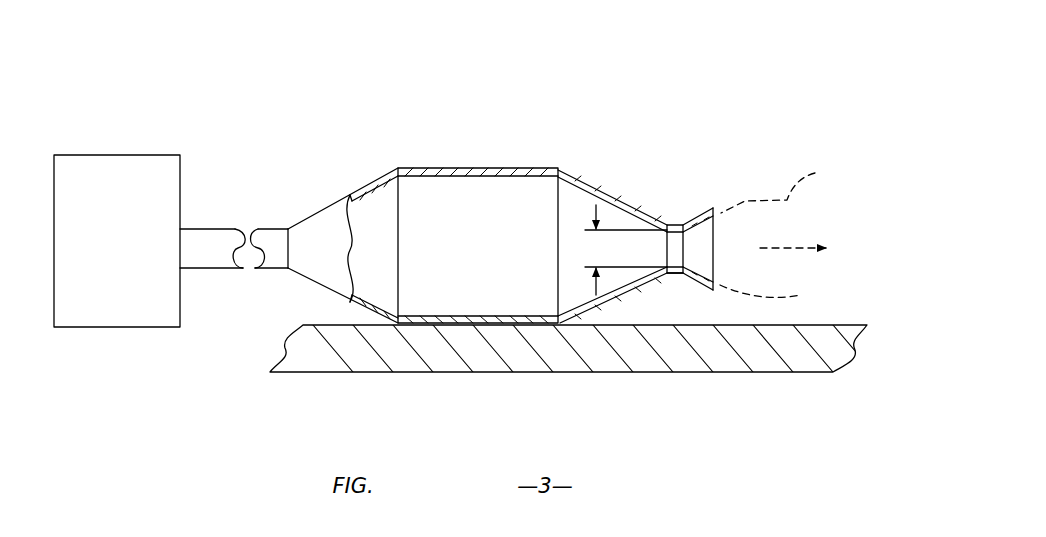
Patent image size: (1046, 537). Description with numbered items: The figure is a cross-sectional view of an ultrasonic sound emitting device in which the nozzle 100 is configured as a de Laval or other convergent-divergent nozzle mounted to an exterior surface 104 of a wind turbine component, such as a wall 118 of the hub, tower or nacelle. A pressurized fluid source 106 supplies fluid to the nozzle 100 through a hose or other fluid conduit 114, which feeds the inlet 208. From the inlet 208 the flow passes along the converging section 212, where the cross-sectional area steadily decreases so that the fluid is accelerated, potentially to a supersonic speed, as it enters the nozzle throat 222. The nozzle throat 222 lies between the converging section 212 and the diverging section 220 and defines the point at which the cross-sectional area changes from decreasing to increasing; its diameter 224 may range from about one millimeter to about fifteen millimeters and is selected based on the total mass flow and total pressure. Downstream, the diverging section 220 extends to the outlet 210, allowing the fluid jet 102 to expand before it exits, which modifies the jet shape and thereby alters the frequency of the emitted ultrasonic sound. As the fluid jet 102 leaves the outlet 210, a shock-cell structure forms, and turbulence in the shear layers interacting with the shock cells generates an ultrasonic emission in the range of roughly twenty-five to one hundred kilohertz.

The nozzle 100 is at (708, 51).
The fluid jet 102 is at (789, 204).
The exterior surface 104 is at (788, 327).
The pressurized fluid source 106 is at (137, 247).
The fluid conduit 114 is at (208, 243).
The wall 118 is at (723, 357).
The inlet 208 is at (373, 192).
The outlet 210 is at (738, 207).
The converging section 212 is at (675, 216).
The diverging section 220 is at (697, 218).
The nozzle throat 222 is at (677, 258).
The diameter 224 is at (588, 200).